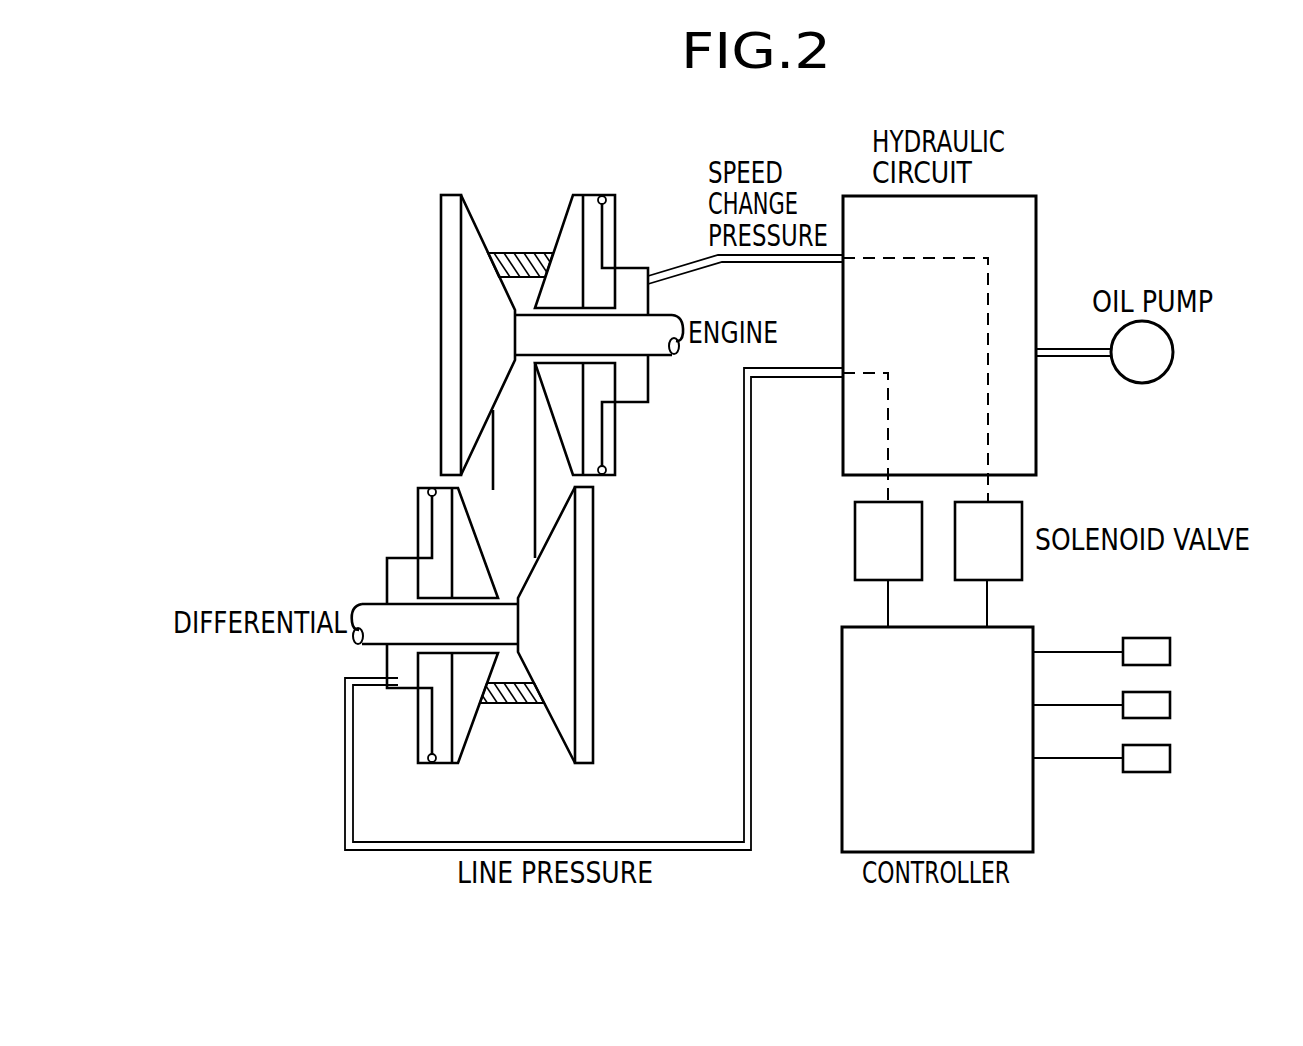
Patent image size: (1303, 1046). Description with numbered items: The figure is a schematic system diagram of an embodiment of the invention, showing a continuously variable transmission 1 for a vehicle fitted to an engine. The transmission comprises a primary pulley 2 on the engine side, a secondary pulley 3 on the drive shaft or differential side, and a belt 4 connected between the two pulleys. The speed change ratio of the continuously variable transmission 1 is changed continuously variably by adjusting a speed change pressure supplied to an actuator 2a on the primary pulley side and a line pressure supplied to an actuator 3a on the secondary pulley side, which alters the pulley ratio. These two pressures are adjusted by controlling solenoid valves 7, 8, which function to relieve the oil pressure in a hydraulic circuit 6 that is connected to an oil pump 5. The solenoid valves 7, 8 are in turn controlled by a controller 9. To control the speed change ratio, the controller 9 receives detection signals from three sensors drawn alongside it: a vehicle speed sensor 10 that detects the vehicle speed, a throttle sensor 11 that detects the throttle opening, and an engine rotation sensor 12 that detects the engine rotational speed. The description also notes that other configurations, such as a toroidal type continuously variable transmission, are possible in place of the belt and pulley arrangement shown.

The continuously variable transmission 1 is at (508, 475).
The primary pulley 2 is at (565, 225).
The actuator 2a is at (615, 274).
The secondary pulley 3 is at (470, 728).
The actuator 3a is at (413, 687).
The belt 4 is at (497, 484).
The oil pump 5 is at (1152, 383).
The hydraulic circuit 6 is at (1037, 217).
The solenoid valve 7 is at (1022, 520).
The solenoid valve 8 is at (855, 520).
The controller 9 is at (1033, 833).
The vehicle speed sensor 10 is at (1170, 651).
The throttle sensor 11 is at (1170, 704).
The engine rotation sensor 12 is at (1170, 758).